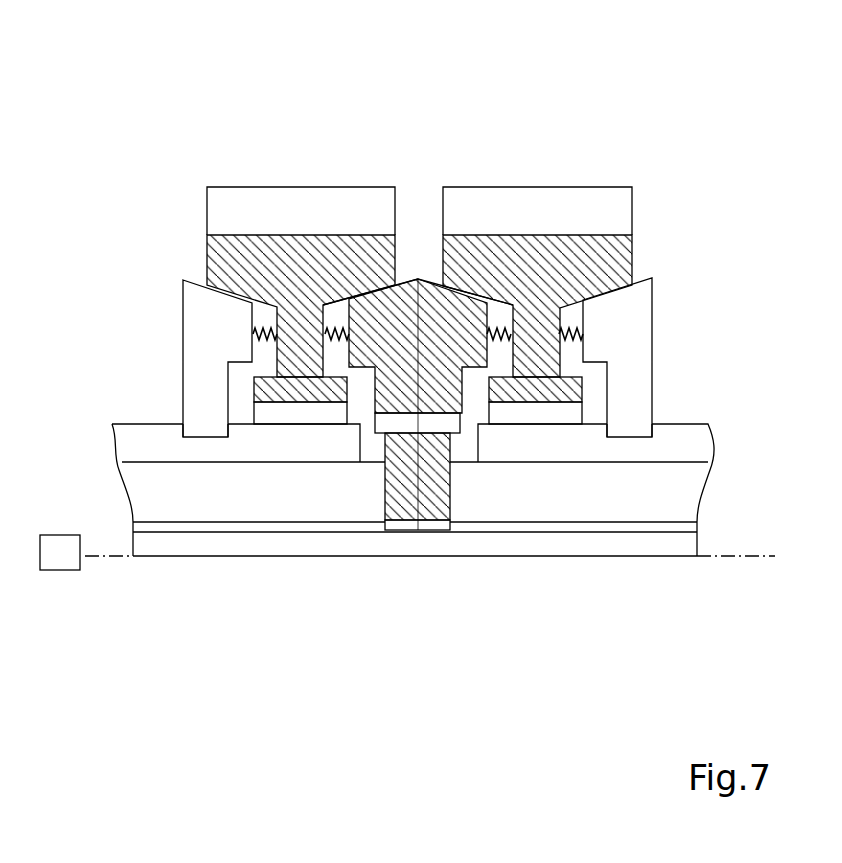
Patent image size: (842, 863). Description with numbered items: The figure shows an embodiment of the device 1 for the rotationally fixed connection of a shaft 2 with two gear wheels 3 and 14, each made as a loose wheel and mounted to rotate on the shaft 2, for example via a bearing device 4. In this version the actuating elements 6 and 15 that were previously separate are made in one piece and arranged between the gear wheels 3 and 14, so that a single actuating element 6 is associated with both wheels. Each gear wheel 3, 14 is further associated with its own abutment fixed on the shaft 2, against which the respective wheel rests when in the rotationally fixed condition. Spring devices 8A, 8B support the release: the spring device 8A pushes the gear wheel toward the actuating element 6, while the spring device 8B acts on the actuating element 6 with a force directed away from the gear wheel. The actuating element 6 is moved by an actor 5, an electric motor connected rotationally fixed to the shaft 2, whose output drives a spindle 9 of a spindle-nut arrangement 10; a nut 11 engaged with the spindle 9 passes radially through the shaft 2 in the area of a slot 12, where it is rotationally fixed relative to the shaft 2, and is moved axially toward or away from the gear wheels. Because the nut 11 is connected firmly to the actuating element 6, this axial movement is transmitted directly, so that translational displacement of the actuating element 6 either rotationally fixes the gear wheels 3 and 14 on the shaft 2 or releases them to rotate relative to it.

The device 1 is at (265, 93).
The shaft 2 is at (155, 437).
The gear wheel 3 is at (378, 203).
The bearing device 4 is at (292, 407).
The actor 5 is at (57, 535).
The actuating element 6 is at (390, 363).
The spring device 8A is at (258, 345).
The spring device 8B is at (331, 338).
The spindle 9 is at (553, 570).
The spindle-nut arrangement 10 is at (435, 555).
The nut 11 is at (437, 490).
The slot 12 is at (462, 448).
The gear wheel 14 is at (550, 207).
The actuating element 15 is at (458, 355).